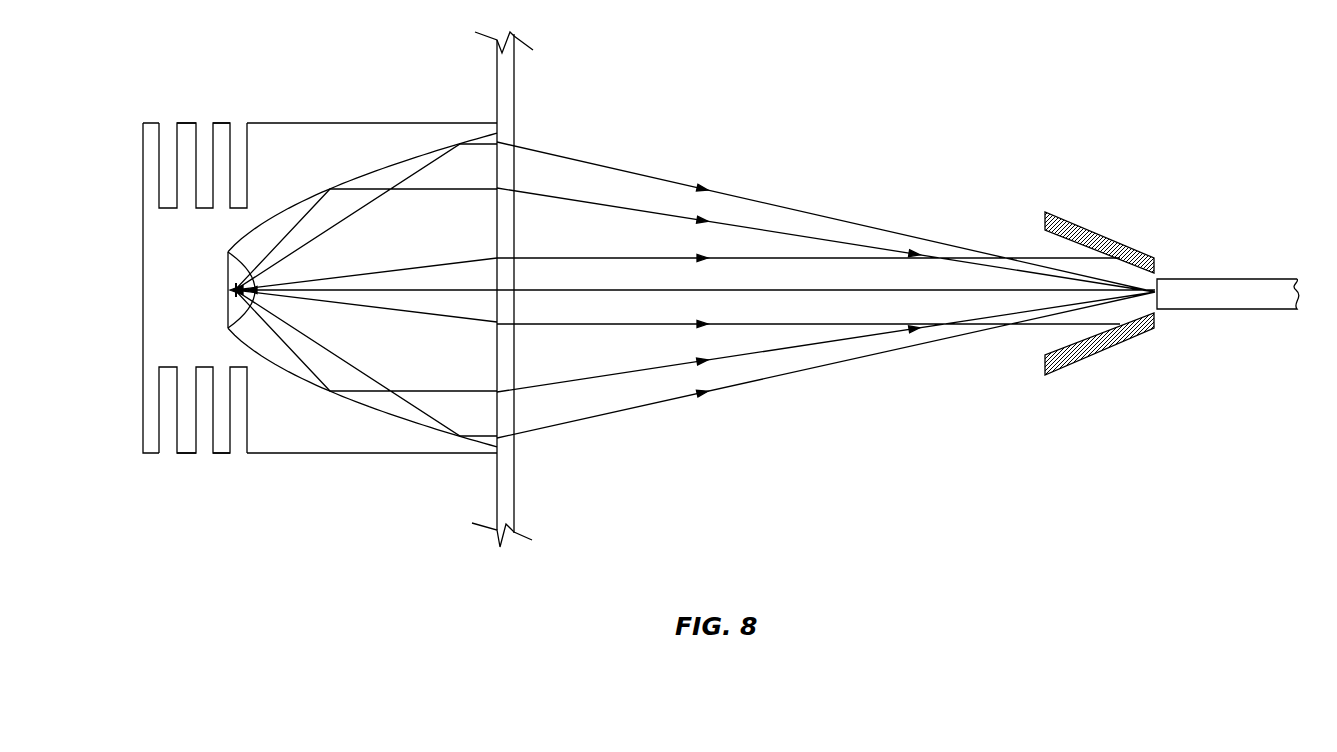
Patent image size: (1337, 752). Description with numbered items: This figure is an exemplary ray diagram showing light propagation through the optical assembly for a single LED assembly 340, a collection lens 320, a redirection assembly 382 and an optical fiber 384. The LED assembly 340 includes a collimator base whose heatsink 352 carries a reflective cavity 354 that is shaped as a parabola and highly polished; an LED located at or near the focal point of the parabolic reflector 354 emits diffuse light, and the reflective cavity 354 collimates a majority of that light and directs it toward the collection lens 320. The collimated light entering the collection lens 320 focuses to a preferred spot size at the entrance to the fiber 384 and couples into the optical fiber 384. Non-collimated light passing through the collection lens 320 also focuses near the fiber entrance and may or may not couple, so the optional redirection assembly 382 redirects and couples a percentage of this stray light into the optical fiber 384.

The collection lens 320 is at (514, 490).
The LED assembly 340 is at (142, 313).
The heatsink 352 is at (143, 455).
The reflective cavity 354 is at (395, 161).
The redirection assembly 382 is at (1102, 236).
The optical fiber 384 is at (1248, 310).